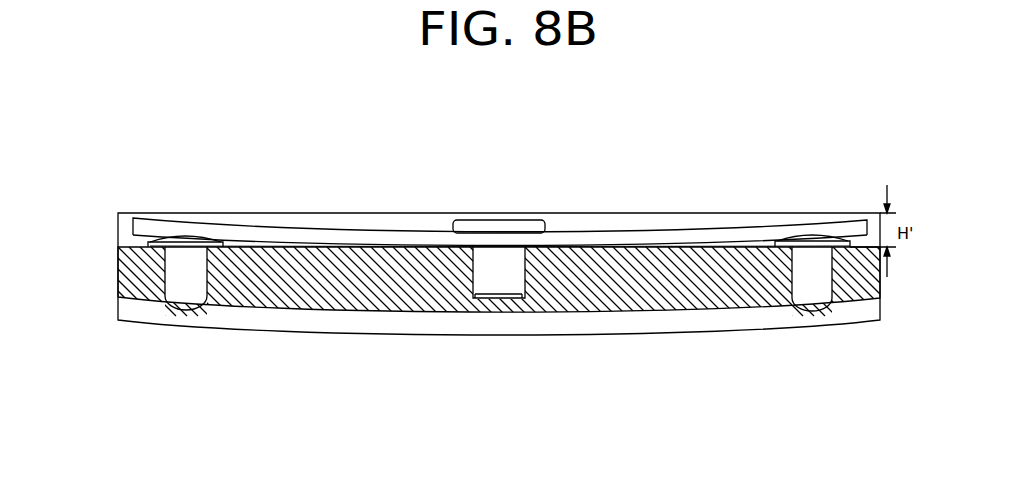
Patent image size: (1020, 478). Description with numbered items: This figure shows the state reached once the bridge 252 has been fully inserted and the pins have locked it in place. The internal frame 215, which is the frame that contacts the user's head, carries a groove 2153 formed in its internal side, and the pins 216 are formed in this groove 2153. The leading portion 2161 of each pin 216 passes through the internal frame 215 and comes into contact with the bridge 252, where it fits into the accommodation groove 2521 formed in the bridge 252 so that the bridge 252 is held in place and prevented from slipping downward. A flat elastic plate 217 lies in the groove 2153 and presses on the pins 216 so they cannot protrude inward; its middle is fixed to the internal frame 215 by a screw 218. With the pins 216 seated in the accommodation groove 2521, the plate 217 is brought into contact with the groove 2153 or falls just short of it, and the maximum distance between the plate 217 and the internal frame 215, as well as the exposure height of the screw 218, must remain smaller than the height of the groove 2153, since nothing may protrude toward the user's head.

The internal frame 215 is at (576, 292).
The groove 2153 is at (638, 222).
The pin 216 is at (173, 273).
The leading portion 2161 is at (190, 300).
The plate 217 is at (418, 240).
The screw 218 is at (501, 228).
The bridge 252 is at (280, 318).
The accommodation groove 2521 is at (185, 310).